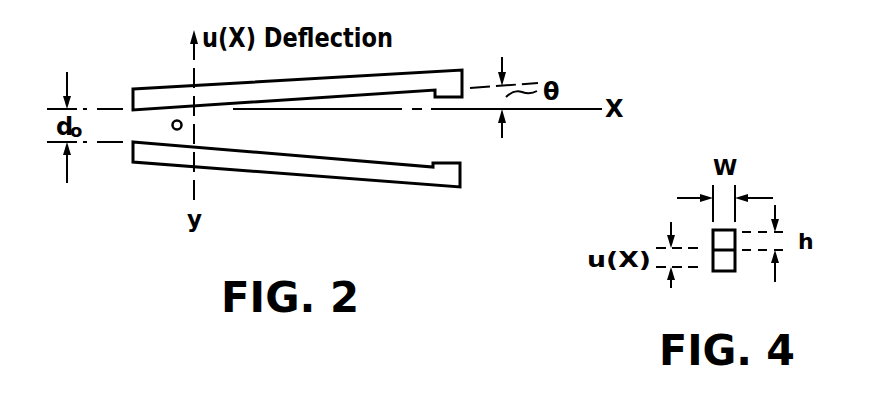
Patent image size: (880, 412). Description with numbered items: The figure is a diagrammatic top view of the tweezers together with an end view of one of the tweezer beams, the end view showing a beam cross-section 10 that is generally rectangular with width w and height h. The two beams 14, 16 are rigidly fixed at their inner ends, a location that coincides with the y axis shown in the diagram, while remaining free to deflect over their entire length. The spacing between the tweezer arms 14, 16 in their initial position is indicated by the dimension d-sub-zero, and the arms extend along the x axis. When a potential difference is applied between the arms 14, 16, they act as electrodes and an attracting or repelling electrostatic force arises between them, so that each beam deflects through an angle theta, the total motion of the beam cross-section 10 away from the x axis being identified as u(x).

In FIG. 2, the tweezer beam 14 is at (424, 69).
In FIG. 2, the tweezer beam 16 is at (341, 181).
In FIG. 4, the beam cross-section 10 is at (724, 250).